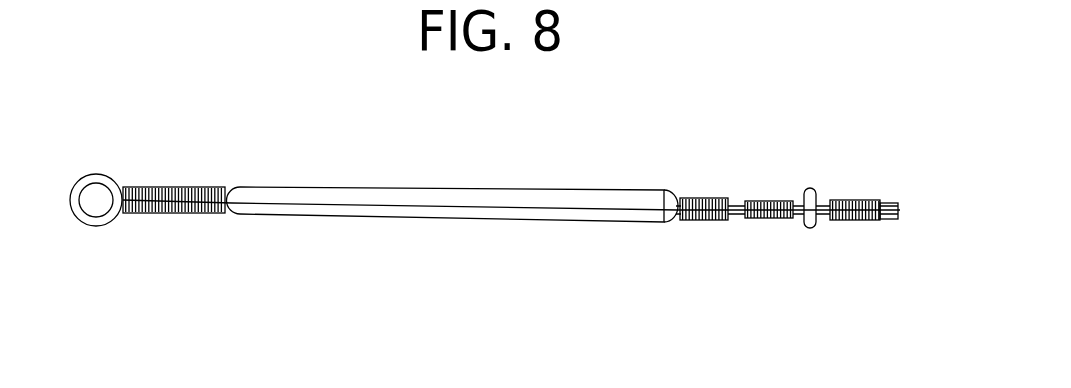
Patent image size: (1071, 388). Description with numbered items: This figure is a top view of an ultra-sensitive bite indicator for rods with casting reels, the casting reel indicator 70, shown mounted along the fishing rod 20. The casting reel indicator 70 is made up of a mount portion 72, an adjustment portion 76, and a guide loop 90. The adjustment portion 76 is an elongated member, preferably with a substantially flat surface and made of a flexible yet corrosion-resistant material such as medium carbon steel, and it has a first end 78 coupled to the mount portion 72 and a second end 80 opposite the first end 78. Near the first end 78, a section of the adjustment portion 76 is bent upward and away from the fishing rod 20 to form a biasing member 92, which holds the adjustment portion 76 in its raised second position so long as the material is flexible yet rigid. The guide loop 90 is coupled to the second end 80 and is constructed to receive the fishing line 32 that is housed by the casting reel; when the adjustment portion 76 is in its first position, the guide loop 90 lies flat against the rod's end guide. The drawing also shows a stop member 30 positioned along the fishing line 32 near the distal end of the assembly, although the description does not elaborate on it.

The fishing rod 20 is at (892, 202).
The stop member 30 is at (812, 230).
The fishing line 32 is at (362, 205).
The casting reel indicator 70 is at (232, 164).
The mount portion 72 is at (710, 197).
The adjustment portion 76 is at (513, 198).
The first end 78 is at (678, 222).
The second end 80 is at (122, 210).
The guide loop 90 is at (92, 173).
The biasing member 92 is at (677, 197).